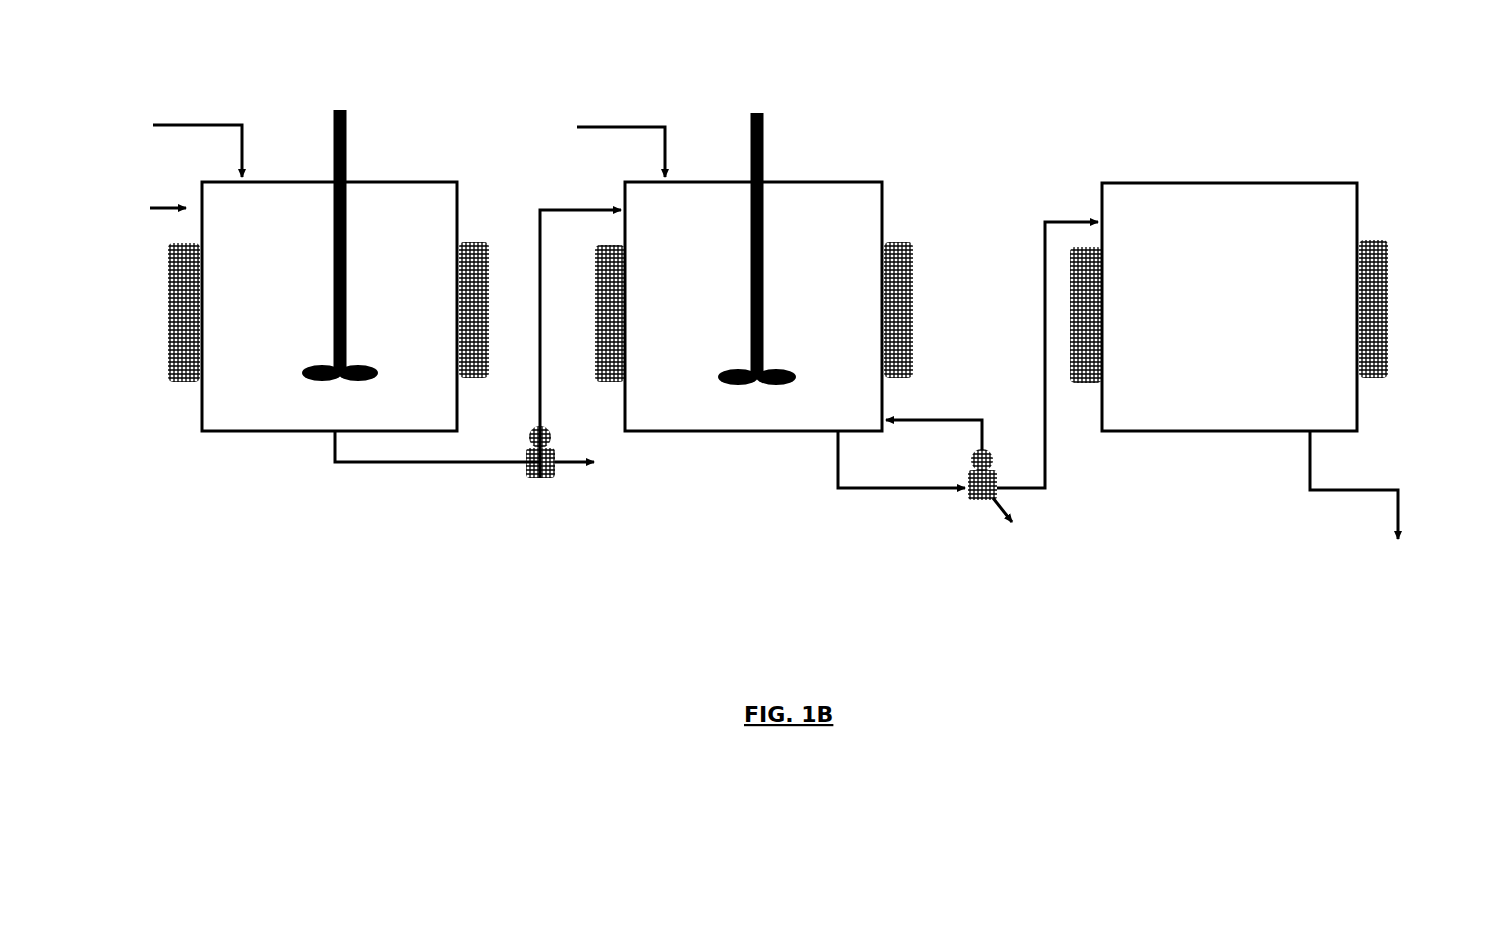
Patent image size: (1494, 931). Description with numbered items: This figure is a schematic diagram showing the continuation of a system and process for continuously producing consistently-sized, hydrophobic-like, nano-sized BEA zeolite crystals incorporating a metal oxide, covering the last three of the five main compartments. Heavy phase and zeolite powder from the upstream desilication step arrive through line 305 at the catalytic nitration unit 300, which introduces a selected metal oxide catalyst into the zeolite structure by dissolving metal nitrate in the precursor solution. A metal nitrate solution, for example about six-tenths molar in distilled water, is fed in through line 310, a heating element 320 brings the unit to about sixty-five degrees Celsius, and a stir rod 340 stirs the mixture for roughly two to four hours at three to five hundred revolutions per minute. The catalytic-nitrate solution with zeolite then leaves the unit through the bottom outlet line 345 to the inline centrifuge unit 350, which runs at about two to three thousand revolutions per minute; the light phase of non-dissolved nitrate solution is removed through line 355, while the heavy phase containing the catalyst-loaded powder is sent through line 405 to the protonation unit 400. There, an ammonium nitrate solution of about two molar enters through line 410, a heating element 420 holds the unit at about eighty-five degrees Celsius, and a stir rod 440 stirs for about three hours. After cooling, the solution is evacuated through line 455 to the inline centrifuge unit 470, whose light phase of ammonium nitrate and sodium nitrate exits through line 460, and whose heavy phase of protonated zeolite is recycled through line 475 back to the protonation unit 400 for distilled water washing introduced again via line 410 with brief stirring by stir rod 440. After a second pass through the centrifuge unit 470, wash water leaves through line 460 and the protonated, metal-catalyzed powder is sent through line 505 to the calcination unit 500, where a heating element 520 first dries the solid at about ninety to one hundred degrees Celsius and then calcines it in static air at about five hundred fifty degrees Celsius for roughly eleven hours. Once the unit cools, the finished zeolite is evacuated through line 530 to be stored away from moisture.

The catalytic nitration unit 300 is at (329, 387).
The line 305 is at (143, 209).
The line 310 is at (186, 127).
The heating element 320 is at (164, 358).
The stir rod 340 is at (350, 143).
The outlet line 345 is at (334, 463).
The inline centrifuge unit 350 is at (545, 470).
The line 355 is at (584, 478).
The protonation unit 400 is at (753, 392).
The line 405 is at (580, 330).
The line 410 is at (625, 124).
The heating element 420 is at (913, 340).
The stir rod 440 is at (767, 121).
The line 455 is at (852, 497).
The line 460 is at (1017, 525).
The inline centrifuge unit 470 is at (982, 504).
The line 475 is at (944, 420).
The calcination unit 500 is at (1229, 407).
The line 505 is at (1047, 337).
The heating element 520 is at (1393, 275).
The line 530 is at (1407, 535).